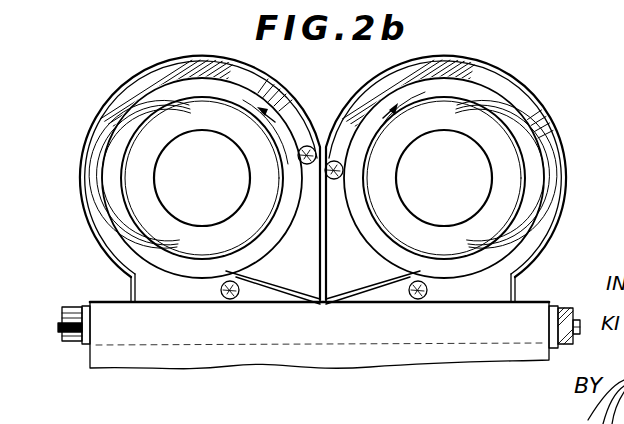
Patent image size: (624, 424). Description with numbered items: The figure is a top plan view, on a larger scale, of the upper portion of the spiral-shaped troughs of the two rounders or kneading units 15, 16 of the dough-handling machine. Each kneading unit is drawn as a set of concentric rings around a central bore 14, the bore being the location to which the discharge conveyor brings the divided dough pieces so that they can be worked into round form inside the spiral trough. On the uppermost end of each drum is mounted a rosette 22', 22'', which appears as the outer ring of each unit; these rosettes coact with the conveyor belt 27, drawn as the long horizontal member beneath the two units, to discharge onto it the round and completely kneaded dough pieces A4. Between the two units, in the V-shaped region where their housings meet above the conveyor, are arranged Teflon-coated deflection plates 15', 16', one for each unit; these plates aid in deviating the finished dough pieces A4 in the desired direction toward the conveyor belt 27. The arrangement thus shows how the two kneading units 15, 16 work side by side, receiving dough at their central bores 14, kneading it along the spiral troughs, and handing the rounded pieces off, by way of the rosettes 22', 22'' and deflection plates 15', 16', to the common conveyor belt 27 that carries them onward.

The central bore 14 is at (216, 194).
The rounder or kneading unit 15 is at (170, 178).
The rounder or kneading unit 16 is at (473, 178).
The deflection plate 15' is at (273, 271).
The deflection plate 16' is at (373, 272).
The rosette 22' is at (181, 179).
The rosette 22'' is at (450, 179).
The conveyor belt 27 is at (92, 366).
The round and completely kneaded dough pieces A4 is at (231, 300).